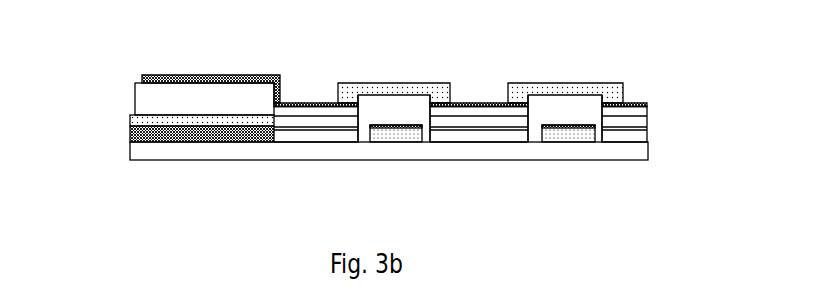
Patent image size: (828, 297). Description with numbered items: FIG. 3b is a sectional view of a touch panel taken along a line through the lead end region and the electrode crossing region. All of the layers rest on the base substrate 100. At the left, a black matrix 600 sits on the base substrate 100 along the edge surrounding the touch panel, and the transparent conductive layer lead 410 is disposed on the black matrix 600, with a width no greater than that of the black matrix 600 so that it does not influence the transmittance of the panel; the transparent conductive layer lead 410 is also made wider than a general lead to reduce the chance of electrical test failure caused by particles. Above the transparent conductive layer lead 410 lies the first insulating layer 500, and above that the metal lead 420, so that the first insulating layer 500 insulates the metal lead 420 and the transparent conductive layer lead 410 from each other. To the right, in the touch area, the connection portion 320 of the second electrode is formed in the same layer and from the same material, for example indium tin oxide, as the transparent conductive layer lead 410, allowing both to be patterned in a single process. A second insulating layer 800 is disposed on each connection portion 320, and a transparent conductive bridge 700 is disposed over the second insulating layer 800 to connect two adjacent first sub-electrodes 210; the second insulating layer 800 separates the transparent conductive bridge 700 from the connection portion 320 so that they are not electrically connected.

The base substrate 100 is at (172, 153).
The first sub-electrode 210 is at (565, 66).
The connection portion 320 is at (387, 132).
The transparent conductive layer lead 410 is at (388, 37).
The metal lead 420 is at (172, 77).
The first insulating layer 500 is at (165, 105).
The black matrix 600 is at (130, 130).
The transparent conductive bridge 700 is at (452, 115).
The second insulating layer 800 is at (573, 123).